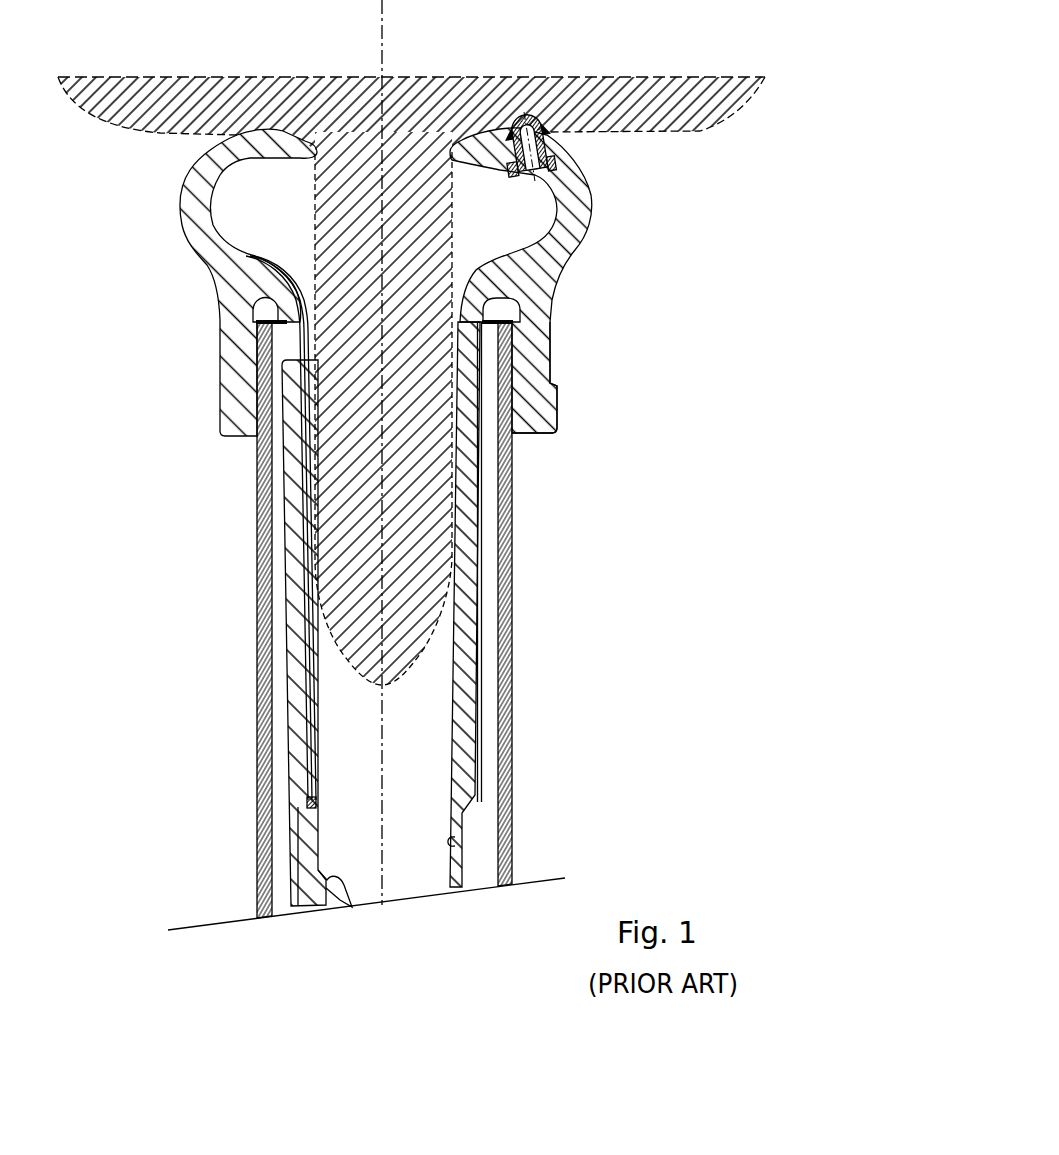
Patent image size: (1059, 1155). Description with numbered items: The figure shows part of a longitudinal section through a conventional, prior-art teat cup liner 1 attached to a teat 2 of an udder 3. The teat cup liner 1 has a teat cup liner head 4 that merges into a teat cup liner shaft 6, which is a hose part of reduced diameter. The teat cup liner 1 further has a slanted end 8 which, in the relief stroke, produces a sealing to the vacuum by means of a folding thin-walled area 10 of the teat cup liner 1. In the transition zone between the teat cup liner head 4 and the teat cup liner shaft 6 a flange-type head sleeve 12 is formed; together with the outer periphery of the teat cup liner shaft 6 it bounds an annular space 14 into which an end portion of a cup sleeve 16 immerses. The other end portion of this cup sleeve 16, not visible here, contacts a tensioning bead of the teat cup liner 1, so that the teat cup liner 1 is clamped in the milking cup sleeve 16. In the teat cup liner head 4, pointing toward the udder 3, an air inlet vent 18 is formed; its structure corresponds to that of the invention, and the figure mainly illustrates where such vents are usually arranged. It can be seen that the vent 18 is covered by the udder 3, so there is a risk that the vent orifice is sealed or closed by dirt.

The teat cup liner 1 is at (571, 282).
The teat 2 is at (438, 441).
The udder 3 is at (660, 83).
The teat cup liner head 4 is at (597, 208).
The teat cup liner shaft 6 is at (467, 628).
The slanted end 8 is at (342, 882).
The folding thin-walled area 10 is at (450, 843).
The head sleeve 12 is at (542, 351).
The annular space 14 is at (262, 308).
The cup sleeve 16 is at (262, 517).
The vent 18 is at (500, 152).